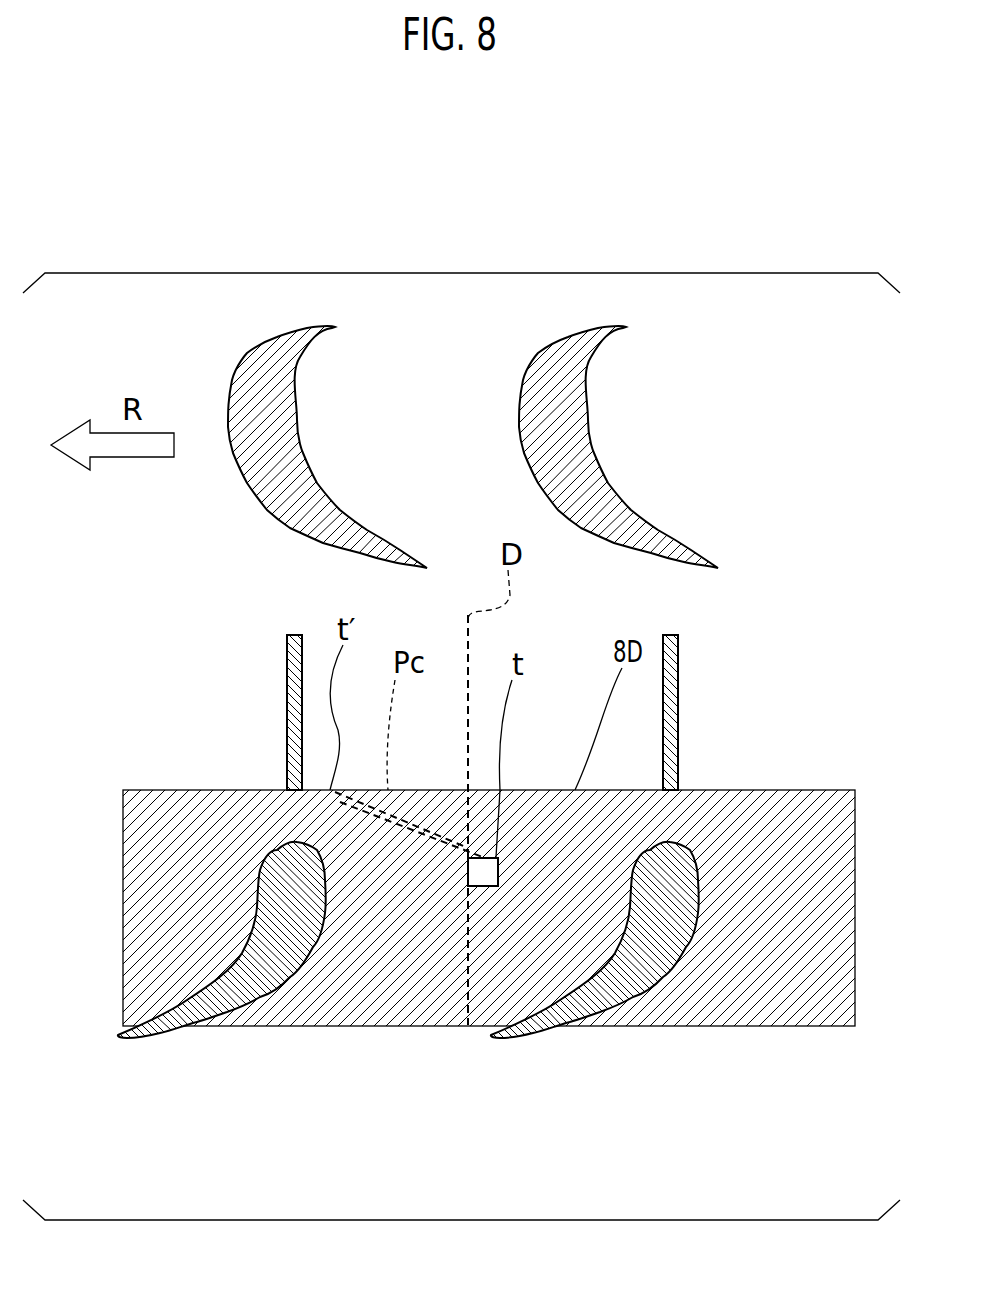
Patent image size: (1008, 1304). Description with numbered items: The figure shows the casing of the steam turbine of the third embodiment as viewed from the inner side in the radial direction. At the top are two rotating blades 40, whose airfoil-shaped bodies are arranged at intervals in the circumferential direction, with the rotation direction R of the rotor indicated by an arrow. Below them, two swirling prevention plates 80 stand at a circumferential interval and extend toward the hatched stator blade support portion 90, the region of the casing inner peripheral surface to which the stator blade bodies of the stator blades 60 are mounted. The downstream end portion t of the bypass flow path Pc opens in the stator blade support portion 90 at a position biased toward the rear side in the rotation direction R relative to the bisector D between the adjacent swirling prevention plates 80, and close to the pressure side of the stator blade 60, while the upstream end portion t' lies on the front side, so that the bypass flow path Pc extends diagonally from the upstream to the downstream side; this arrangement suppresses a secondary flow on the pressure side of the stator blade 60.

The rotating blade 40 is at (257, 495).
The swirling prevention plate 80 is at (287, 692).
The stator blade 60 is at (490, 1040).
The stator blade support portion 90 is at (735, 940).